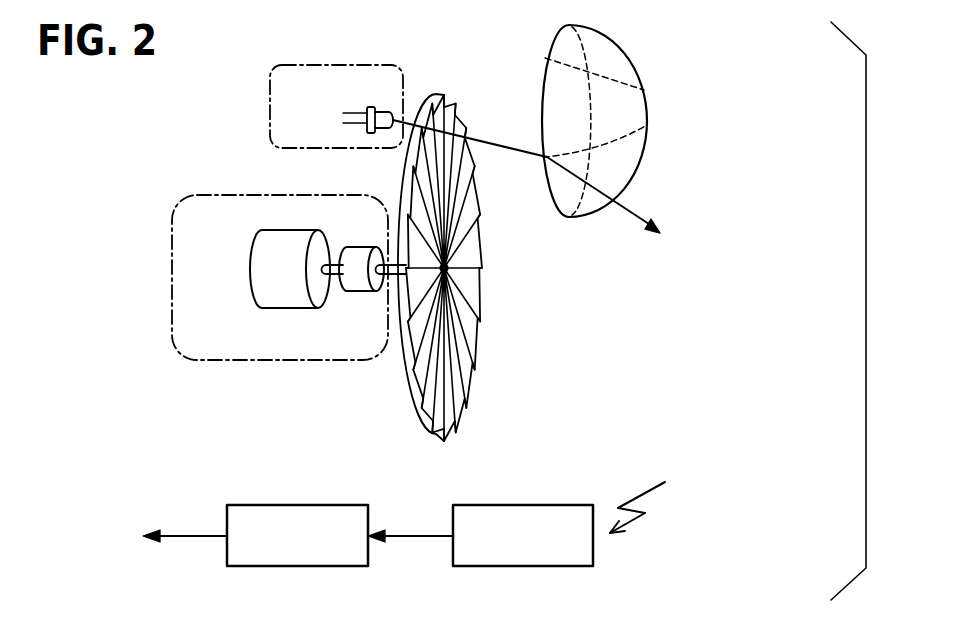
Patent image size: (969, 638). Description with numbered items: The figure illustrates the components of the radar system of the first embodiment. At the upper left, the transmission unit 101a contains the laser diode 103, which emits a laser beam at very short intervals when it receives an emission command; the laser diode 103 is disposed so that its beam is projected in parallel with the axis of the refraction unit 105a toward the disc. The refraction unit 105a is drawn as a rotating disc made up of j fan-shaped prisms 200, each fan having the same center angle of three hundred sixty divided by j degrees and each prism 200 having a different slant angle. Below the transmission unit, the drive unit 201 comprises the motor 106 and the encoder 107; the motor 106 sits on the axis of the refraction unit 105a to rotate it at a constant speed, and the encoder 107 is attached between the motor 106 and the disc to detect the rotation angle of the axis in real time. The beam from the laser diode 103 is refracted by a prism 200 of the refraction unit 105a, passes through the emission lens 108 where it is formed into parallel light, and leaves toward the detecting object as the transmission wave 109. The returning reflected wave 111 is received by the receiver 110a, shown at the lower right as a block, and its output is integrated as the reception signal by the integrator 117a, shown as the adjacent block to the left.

The transmission unit 101a is at (305, 65).
The laser diode 103 is at (368, 108).
The drive unit 201 is at (255, 194).
The motor 106 is at (262, 288).
The encoder 107 is at (366, 291).
The refraction unit 105a is at (400, 429).
The prism 200 is at (406, 382).
The emission lens 108 is at (570, 217).
The transmission wave 109 is at (615, 204).
The integrator 117a is at (305, 566).
The receiver 110a is at (536, 566).
The reflected wave 111 is at (715, 493).